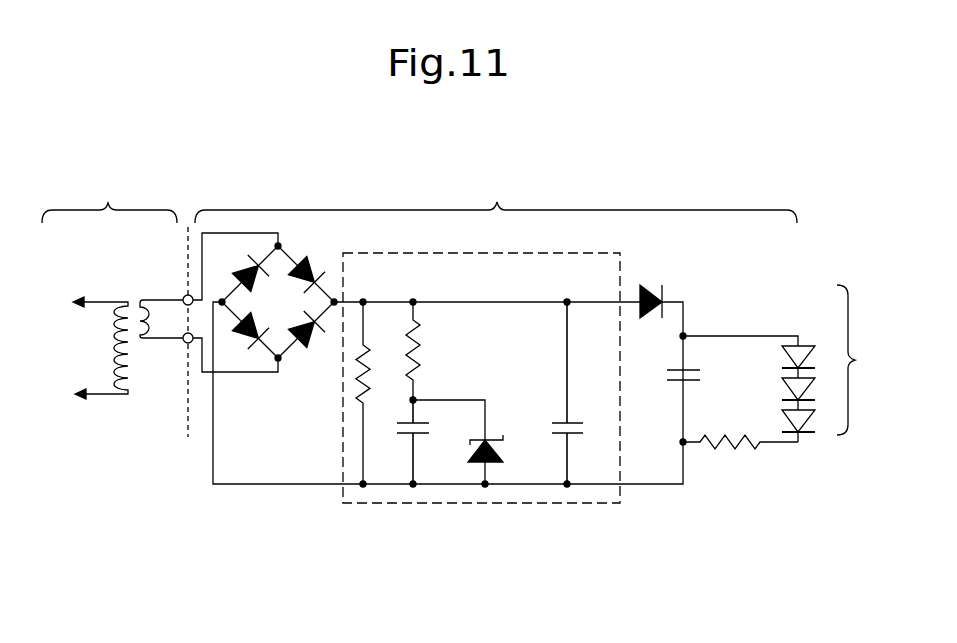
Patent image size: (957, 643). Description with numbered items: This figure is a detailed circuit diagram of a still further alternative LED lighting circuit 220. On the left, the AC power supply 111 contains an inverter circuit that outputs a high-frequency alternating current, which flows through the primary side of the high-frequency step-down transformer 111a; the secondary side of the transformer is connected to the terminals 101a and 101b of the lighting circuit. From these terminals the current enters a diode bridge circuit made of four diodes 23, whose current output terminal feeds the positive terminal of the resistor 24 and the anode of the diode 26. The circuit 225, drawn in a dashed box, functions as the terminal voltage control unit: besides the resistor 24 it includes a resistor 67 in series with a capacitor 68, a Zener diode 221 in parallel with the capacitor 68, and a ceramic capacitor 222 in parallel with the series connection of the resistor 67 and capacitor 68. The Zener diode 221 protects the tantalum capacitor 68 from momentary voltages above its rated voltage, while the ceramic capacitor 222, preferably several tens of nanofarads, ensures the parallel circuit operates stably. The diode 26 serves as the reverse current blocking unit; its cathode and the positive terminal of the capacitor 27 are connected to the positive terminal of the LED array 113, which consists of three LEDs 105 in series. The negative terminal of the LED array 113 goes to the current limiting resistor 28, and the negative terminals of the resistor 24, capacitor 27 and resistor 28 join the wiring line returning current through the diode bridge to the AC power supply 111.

The AC power supply 111 is at (112, 281).
The high-frequency step-down transformer 111a is at (95, 402).
The terminal 101a is at (184, 295).
The terminal 101b is at (188, 344).
The LED lighting circuit 220 is at (496, 197).
The diodes 23 is at (318, 257).
The circuit 225 is at (485, 505).
The resistor 24 is at (370, 404).
The resistor 67 is at (422, 358).
The capacitor 68 is at (420, 440).
The Zener diode 221 is at (497, 437).
The ceramic capacitor 222 is at (575, 418).
The diode 26 is at (652, 280).
The capacitor 27 is at (697, 385).
The current limiting resistor 28 is at (727, 450).
The LEDs 105 is at (800, 341).
The LED array 113 is at (868, 360).